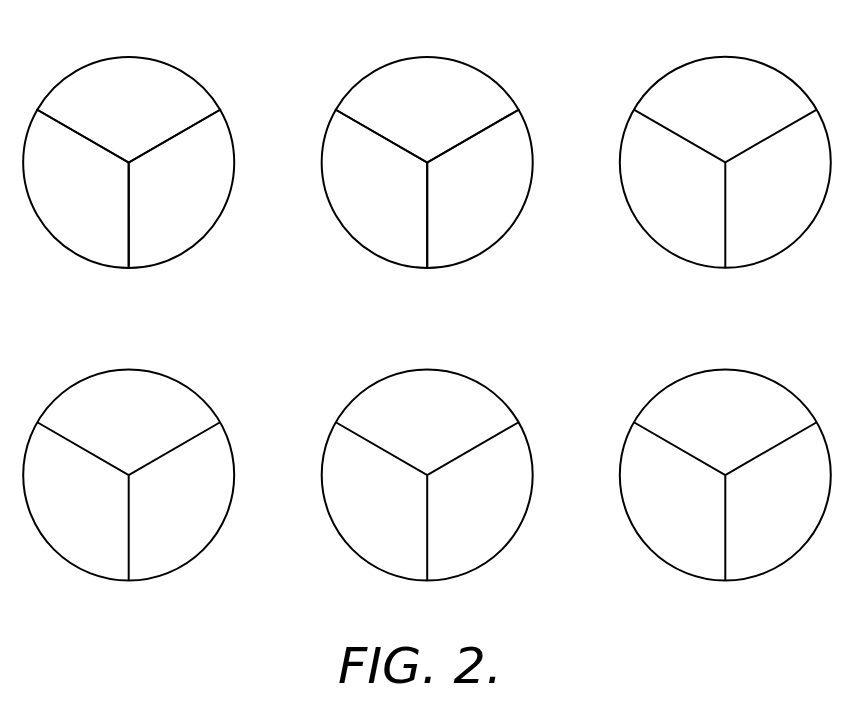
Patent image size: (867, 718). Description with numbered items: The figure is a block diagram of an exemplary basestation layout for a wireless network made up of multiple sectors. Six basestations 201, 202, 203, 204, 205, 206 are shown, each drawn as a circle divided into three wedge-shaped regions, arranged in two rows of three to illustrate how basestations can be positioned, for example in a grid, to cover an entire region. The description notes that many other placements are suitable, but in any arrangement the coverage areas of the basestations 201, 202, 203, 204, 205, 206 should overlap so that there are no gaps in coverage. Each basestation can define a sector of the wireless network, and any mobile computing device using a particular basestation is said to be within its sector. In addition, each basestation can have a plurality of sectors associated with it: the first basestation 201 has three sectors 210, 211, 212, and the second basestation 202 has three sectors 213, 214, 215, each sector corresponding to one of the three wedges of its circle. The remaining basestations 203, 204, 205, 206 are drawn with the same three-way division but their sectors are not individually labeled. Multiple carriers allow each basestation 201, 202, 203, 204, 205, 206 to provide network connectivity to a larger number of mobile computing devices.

The basestation 201 is at (128, 151).
The basestation 202 is at (427, 151).
The basestation 203 is at (744, 58).
The basestation 204 is at (147, 371).
The basestation 205 is at (446, 371).
The basestation 206 is at (744, 371).
The sector 210 is at (108, 128).
The sector 211 is at (60, 212).
The sector 212 is at (159, 212).
The sector 213 is at (407, 128).
The sector 214 is at (358, 212).
The sector 215 is at (457, 212).